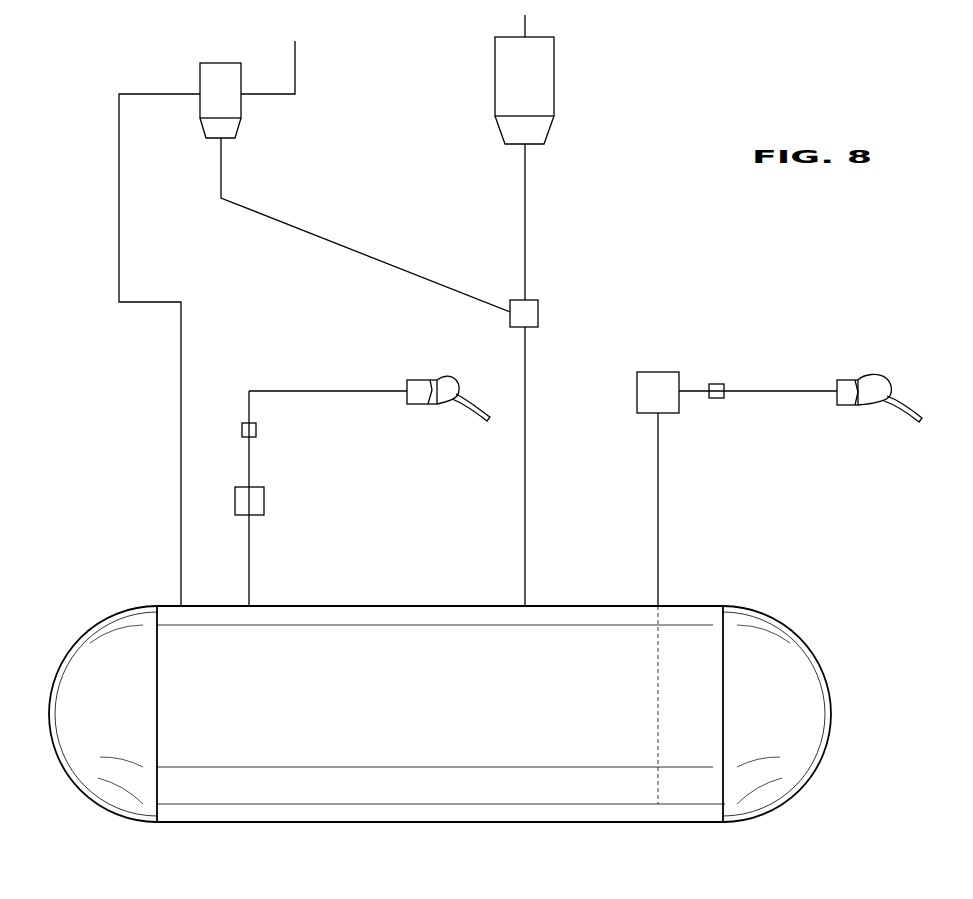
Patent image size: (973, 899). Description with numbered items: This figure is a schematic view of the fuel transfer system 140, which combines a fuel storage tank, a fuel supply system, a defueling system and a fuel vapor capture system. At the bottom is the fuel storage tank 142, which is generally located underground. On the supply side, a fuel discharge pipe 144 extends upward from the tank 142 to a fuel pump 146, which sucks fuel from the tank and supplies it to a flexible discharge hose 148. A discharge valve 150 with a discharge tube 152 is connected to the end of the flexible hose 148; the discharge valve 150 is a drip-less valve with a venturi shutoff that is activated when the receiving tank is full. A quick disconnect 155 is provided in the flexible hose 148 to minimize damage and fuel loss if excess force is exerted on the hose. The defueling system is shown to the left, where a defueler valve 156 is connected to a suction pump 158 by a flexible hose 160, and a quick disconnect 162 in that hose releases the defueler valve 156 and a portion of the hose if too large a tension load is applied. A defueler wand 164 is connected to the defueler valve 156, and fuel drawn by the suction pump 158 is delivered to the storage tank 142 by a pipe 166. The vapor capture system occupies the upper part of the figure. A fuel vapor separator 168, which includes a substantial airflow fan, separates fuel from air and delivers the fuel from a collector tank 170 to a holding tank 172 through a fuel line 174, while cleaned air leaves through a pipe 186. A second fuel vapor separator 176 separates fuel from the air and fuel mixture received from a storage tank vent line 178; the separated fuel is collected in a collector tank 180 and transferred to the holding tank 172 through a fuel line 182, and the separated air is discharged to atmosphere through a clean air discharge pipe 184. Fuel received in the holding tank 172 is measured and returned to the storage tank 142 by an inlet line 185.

The fuel transfer system 140 is at (702, 320).
The fuel storage tank 142 is at (292, 823).
The fuel discharge pipe 144 is at (658, 510).
The fuel pump 146 is at (657, 372).
The flexible discharge hose 148 is at (775, 390).
The discharge valve 150 is at (873, 375).
The discharge tube 152 is at (900, 398).
The quick disconnect 155 is at (717, 398).
The defueler valve 156 is at (442, 377).
The suction pump 158 is at (264, 500).
The flexible hose 160 is at (287, 391).
The quick disconnect 162 is at (256, 432).
The defueler wand 164 is at (473, 408).
The pipe 166 is at (249, 565).
The fuel vapor separator 168 is at (495, 78).
The collector tank 170 is at (497, 126).
The holding tank 172 is at (538, 312).
The fuel line 174 is at (525, 203).
The second fuel vapor separator 176 is at (200, 80).
The storage tank vent line 178 is at (181, 370).
The collector tank 180 is at (240, 126).
The fuel line 182 is at (265, 216).
The clean air discharge pipe 184 is at (296, 72).
The inlet line 185 is at (524, 549).
The pipe 186 is at (525, 27).